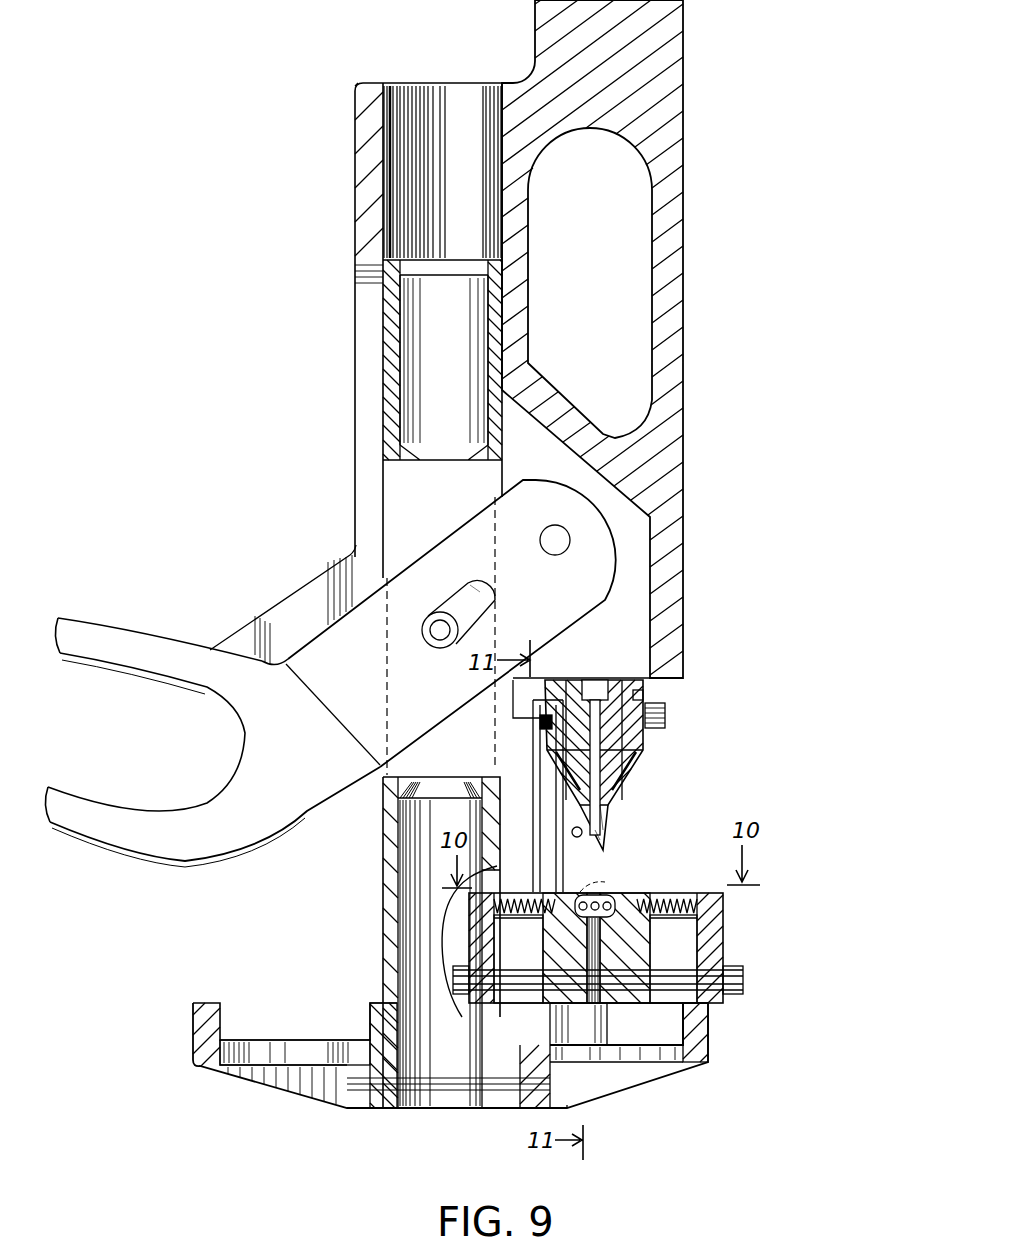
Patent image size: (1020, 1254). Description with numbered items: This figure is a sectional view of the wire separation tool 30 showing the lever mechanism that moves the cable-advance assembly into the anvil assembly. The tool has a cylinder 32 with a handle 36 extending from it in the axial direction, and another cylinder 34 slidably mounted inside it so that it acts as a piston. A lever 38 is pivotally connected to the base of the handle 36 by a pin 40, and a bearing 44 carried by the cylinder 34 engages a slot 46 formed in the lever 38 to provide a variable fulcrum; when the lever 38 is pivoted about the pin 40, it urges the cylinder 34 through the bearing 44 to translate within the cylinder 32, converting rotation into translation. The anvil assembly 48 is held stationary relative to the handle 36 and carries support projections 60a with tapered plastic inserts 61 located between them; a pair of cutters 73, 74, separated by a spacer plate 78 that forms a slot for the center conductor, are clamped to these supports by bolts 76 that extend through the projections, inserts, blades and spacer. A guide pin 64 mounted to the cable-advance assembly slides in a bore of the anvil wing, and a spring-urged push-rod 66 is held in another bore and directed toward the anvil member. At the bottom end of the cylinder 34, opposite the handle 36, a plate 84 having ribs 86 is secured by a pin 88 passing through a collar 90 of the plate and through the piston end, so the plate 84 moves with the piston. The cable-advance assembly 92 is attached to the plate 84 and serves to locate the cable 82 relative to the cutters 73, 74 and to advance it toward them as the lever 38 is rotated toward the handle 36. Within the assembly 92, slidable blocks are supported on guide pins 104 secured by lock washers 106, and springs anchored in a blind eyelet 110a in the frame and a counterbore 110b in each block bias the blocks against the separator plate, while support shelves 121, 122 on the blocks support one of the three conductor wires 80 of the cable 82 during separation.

The wire separation tool 30 is at (735, 400).
The cylinder 32 is at (357, 236).
The cylinder 34 is at (383, 305).
The handle 36 is at (683, 238).
The lever 38 is at (133, 854).
The pin 40 is at (560, 553).
The bearing 44 is at (437, 616).
The slot 46 is at (462, 598).
The anvil assembly 48 is at (670, 745).
The support projections 60a is at (550, 728).
The tapered plastic inserts 61 is at (560, 770).
The guide pin 64 is at (535, 840).
The push-rod 66 is at (600, 824).
The cutter 73 is at (610, 812).
The cutter 74 is at (582, 846).
The bolts 76 is at (665, 713).
The spacer plate 78 is at (600, 690).
The conductor wires 80 is at (612, 893).
The cable 82 is at (605, 880).
The plate 84 is at (712, 1068).
The ribs 86 is at (222, 1010).
The pin 88 is at (455, 1095).
The collar 90 is at (370, 1008).
The cable-advance assembly 92 is at (725, 930).
The guide pins 104 is at (743, 982).
The lock washers 106 is at (735, 966).
The blind eyelet 110a is at (470, 912).
The counterbore 110b is at (680, 888).
The support shelf 121 is at (629, 948).
The support shelf 122 is at (565, 948).